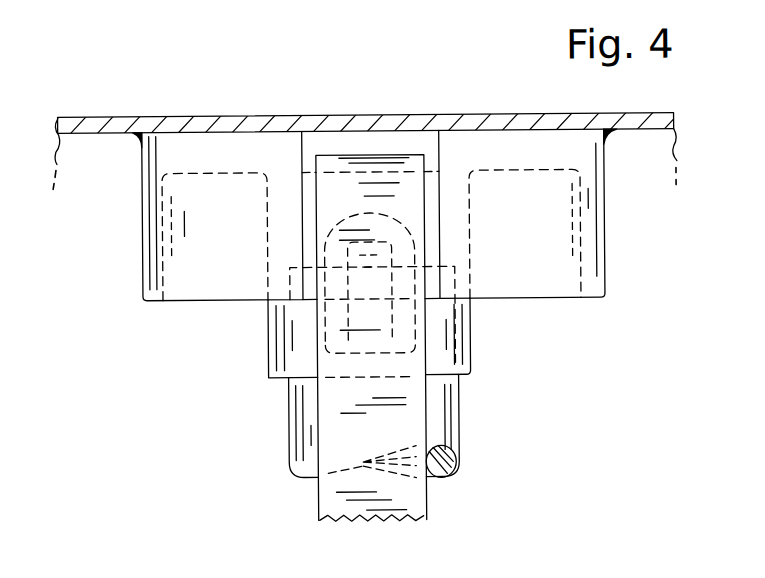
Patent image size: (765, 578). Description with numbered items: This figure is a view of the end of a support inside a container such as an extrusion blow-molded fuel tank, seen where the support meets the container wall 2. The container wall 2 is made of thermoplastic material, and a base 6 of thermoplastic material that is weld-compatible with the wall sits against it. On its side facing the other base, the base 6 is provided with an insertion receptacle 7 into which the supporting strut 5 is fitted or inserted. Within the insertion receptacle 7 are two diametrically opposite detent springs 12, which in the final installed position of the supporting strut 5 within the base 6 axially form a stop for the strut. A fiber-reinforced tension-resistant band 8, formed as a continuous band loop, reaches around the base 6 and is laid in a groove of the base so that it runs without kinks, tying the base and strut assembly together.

The container wall 2 is at (108, 118).
The base 6 is at (568, 157).
The detent spring 12 is at (372, 265).
The insertion receptacle 7 is at (462, 361).
The supporting strut 5 is at (437, 440).
The tension-resistant band 8 is at (407, 495).